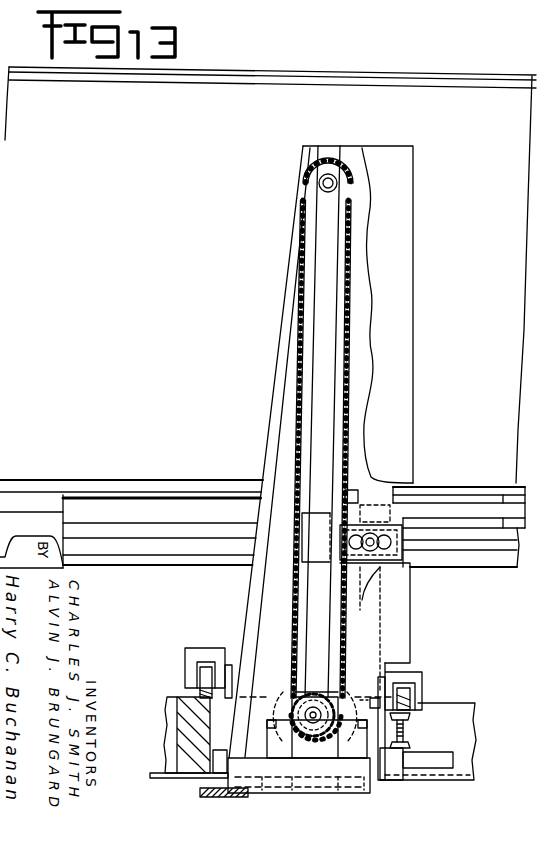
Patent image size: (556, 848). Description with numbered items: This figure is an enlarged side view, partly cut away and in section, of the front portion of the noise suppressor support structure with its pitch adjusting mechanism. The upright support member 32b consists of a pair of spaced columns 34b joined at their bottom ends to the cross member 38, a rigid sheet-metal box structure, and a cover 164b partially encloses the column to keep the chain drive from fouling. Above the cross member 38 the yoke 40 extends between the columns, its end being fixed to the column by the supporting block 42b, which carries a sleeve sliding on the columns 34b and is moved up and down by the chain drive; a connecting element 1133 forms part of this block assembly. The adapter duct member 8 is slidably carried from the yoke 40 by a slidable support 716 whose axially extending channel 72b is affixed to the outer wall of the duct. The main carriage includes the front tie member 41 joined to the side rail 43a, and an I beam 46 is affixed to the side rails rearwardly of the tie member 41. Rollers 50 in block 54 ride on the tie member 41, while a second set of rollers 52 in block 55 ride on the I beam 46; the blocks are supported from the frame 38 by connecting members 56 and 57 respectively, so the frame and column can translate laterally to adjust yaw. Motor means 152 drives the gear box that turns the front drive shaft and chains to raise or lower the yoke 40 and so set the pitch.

The adapter duct member 8 is at (473, 60).
The upright support member 32b is at (279, 196).
The cover 164b is at (413, 276).
The left rail 716 is at (236, 468).
The channel 72b is at (415, 497).
The chain tensioner 1133 is at (405, 526).
The supporting block 42b is at (285, 564).
The spaced columns 34b is at (313, 591).
The yoke 40 is at (373, 593).
The block 54 is at (215, 639).
The rollers 50 is at (203, 677).
The connecting member 57 is at (367, 698).
The block 55 is at (415, 677).
The rollers 52 is at (407, 693).
The I beam 46 is at (407, 731).
The side rail 43a is at (463, 744).
The motor means 152 is at (430, 776).
The cross member 38 is at (341, 804).
The front tie member 41 is at (193, 768).
The connecting member 56 is at (200, 791).